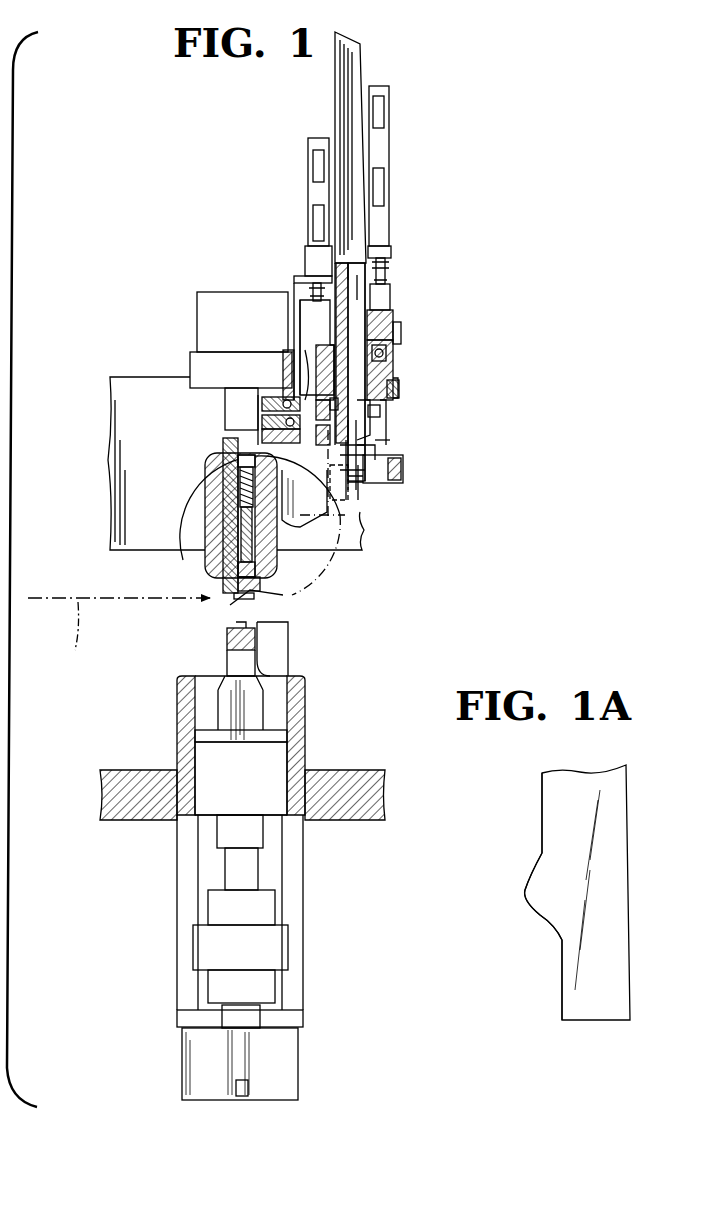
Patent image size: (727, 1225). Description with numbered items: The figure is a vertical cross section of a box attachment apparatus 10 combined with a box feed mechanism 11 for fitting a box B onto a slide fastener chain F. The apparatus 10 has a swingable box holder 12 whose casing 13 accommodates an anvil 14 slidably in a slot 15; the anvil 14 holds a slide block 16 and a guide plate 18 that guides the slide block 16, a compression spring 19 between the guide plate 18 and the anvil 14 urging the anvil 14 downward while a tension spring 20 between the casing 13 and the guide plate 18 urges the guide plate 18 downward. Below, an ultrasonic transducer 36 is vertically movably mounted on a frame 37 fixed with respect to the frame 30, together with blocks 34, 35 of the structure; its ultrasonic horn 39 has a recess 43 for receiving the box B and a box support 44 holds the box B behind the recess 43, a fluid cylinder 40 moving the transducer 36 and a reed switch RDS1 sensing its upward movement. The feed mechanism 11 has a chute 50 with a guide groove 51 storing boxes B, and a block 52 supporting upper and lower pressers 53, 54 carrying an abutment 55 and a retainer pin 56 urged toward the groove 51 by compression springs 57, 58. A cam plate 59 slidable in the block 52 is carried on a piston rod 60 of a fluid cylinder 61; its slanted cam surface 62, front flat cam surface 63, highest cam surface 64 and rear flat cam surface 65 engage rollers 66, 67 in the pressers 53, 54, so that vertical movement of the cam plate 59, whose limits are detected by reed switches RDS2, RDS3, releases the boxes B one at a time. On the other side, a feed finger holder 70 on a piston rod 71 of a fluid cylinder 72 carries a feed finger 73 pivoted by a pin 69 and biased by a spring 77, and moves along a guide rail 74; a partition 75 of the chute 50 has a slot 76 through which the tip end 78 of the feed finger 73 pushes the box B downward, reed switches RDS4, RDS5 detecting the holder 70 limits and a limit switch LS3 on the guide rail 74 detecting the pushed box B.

In FIG. 1, the box attachment apparatus 10 is at (370, 620).
In FIG. 1, the box feed mechanism 11 is at (412, 242).
In FIG. 1, the swingable box holder 12 is at (203, 547).
In FIG. 1, the casing 13 is at (212, 466).
In FIG. 1, the anvil 14 is at (222, 443).
In FIG. 1, the slot 15 is at (222, 516).
In FIG. 1, the slide block 16 is at (232, 565).
In FIG. 1, the guide plate 18 is at (280, 576).
In FIG. 1, the compression spring 19 is at (284, 592).
In FIG. 1, the tension spring 20 is at (237, 487).
In FIG. 1, the frame 30 is at (120, 393).
In FIG. 1, the motor block 34 is at (203, 298).
In FIG. 1, the mounting plate 35 is at (232, 406).
In FIG. 1, the ultrasonic transducer 36 is at (210, 795).
In FIG. 1, the frame 37 is at (346, 782).
In FIG. 1, the ultrasonic horn 39 is at (240, 660).
In FIG. 1, the fluid cylinder 40 is at (288, 1040).
In FIG. 1, the recess 43 is at (236, 626).
In FIG. 1, the box support 44 is at (285, 648).
In FIG. 1, the chute 50 is at (358, 56).
In FIG. 1, the guide groove 51 is at (350, 282).
In FIG. 1, the block 52 is at (278, 537).
In FIG. 1, the upper presser 53 is at (342, 353).
In FIG. 1, the lower presser 54 is at (348, 486).
In FIG. 1, the abutment 55 is at (380, 418).
In FIG. 1, the retainer pin 56 is at (376, 446).
In FIG. 1, the compression spring 57 is at (277, 410).
In FIG. 1, the compression spring 58 is at (268, 420).
In FIG. 1, the cam plate 59 is at (298, 282).
In FIG. 1A, the cam plate 59 is at (551, 817).
In FIG. 1, the piston rod 60 is at (312, 282).
In FIG. 1, the fluid cylinder 61 is at (314, 138).
In FIG. 1, the slanted cam surface 62 is at (292, 365).
In FIG. 1A, the slanted cam surface 62 is at (542, 922).
In FIG. 1A, the front flat cam surface 63 is at (560, 990).
In FIG. 1A, the highest cam surface 64 is at (526, 892).
In FIG. 1A, the rear flat cam surface 65 is at (541, 842).
In FIG. 1, the roller 66 is at (286, 392).
In FIG. 1, the roller 67 is at (262, 512).
In FIG. 1, the pin 69 is at (388, 356).
In FIG. 1, the feed finger holder 70 is at (378, 310).
In FIG. 1, the piston rod 71 is at (383, 268).
In FIG. 1, the fluid cylinder 72 is at (382, 150).
In FIG. 1, the feed finger 73 is at (388, 432).
In FIG. 1, the guide rail 74 is at (376, 456).
In FIG. 1, the partition 75 is at (382, 363).
In FIG. 1, the slot 76 is at (378, 462).
In FIG. 1, the spring 77 is at (395, 382).
In FIG. 1, the tip end 78 is at (388, 440).
In FIG. 1, the box B is at (372, 428).
In FIG. 1, the slide fastener chain F is at (119, 635).
In FIG. 1, the limit switch LS3 is at (390, 478).
In FIG. 1, the reed switch RDS1 is at (242, 1086).
In FIG. 1, the reed switch RDS2 is at (318, 212).
In FIG. 1, the reed switch RDS3 is at (318, 165).
In FIG. 1, the reed switch RDS4 is at (385, 197).
In FIG. 1, the reed switch RDS5 is at (378, 104).